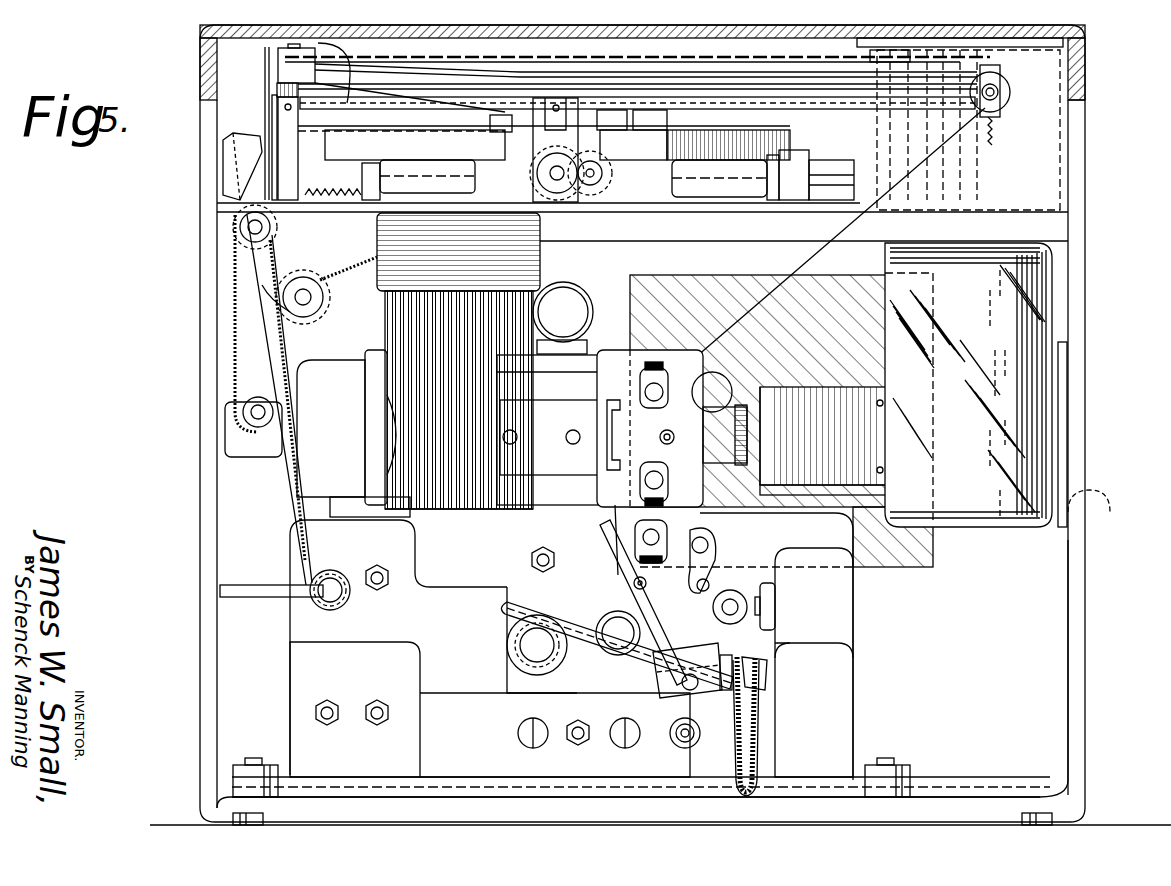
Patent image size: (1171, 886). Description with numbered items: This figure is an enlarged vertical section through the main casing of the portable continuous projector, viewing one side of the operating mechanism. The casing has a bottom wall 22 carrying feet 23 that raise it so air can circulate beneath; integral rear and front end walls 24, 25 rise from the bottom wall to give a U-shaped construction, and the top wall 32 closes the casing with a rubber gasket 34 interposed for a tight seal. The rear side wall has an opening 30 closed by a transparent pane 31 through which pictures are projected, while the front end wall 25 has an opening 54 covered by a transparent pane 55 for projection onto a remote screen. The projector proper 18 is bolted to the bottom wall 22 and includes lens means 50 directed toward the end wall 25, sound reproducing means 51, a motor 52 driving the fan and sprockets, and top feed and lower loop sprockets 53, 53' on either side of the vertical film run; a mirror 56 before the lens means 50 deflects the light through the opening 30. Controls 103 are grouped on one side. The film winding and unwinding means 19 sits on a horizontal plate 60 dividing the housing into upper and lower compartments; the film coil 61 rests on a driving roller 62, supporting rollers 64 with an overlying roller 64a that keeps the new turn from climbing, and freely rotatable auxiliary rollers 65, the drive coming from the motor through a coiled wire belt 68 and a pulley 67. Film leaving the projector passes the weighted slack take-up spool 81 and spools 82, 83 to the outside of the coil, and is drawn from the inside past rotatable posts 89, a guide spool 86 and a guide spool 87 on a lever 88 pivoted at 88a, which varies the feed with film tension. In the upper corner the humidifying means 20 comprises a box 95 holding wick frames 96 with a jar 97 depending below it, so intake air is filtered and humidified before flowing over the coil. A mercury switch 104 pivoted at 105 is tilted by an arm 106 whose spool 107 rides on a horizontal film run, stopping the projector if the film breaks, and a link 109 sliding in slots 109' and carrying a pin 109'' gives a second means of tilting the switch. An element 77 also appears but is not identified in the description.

The projector proper 18 is at (268, 508).
The film winding and unwinding means 19 is at (724, 63).
The air washing and humidifying means 20 is at (1052, 218).
The bottom wall 22 is at (945, 807).
The feet 23 is at (1050, 823).
The rear end wall 24 is at (205, 410).
The front end wall 25 is at (1075, 600).
The opening 30 is at (720, 275).
The pane 31 is at (655, 275).
The top wall 32 is at (1075, 42).
The rubber gasket 34 is at (1080, 98).
The lens means 50 is at (730, 457).
The sound reproducing means 51 is at (840, 617).
The motor 52 is at (340, 365).
The top feed sprocket 53 is at (650, 410).
The lower loop sprocket 53' is at (674, 466).
The opening 54 is at (1103, 504).
The pane of transparent material 55 is at (1062, 375).
The mirror 56 is at (760, 390).
The plate 60 is at (690, 205).
The coil 61 is at (795, 170).
The driving roller 62 is at (543, 200).
The supporting rollers 64 is at (830, 185).
The roller 64a is at (790, 95).
The auxiliary rollers 65 is at (420, 170).
The pulley 67 is at (595, 190).
The coiled wire belt 68 is at (338, 275).
The slider 77 is at (585, 110).
The slack take-up spool 81 is at (612, 612).
The spool 82 is at (335, 573).
The spool 83 is at (233, 140).
The guide spool 86 is at (362, 62).
The guide spool 87 is at (1010, 100).
The lever 88 is at (755, 100).
The pivot 88a is at (300, 147).
The rotatable posts 89 is at (515, 115).
The box 95 is at (1057, 175).
The frames 96 is at (950, 168).
The jar 97 is at (1035, 308).
The controls 103 is at (385, 580).
The mercury switch 104 is at (715, 640).
The pivot 105 is at (685, 700).
The arm 106 is at (640, 668).
The spool 107 is at (520, 605).
The link 109 is at (660, 595).
The slots 109' is at (721, 579).
The pin 109'' is at (616, 541).